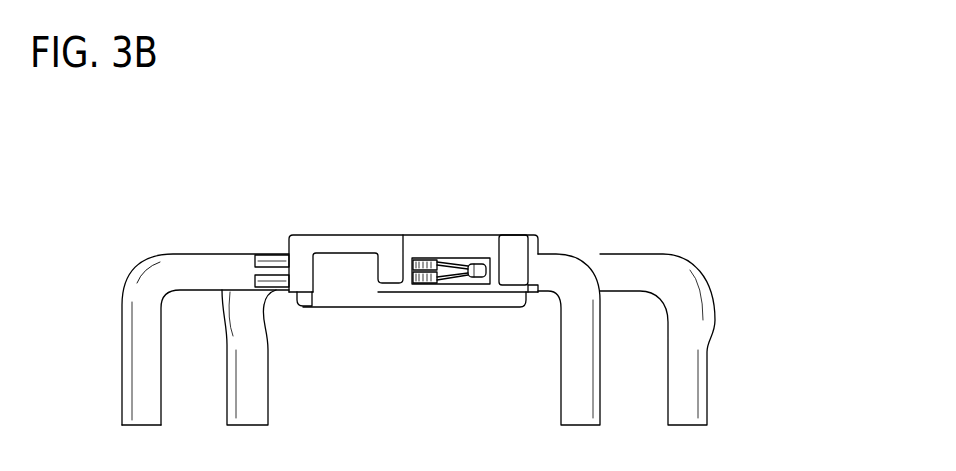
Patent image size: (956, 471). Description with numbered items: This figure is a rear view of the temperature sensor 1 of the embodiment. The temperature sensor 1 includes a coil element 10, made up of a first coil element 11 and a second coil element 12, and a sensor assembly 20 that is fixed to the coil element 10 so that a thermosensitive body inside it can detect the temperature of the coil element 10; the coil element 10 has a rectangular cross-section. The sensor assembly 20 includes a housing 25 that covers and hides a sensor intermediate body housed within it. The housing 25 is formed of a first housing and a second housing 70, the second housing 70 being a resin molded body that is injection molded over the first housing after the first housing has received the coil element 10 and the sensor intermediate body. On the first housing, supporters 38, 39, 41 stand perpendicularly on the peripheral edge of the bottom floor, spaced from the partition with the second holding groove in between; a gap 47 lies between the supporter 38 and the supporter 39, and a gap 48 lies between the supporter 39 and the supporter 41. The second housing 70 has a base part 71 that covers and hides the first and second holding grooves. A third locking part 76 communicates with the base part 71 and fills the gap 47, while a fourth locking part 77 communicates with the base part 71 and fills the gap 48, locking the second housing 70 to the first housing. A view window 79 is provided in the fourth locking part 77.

The temperature sensor 1 is at (505, 165).
The coil element 10 is at (645, 163).
The first coil element 11 is at (643, 254).
The second coil element 12 is at (589, 254).
The sensor assembly 20 is at (381, 227).
The housing 25 is at (413, 235).
The supporter 38 is at (307, 306).
The supporter 39 is at (386, 284).
The supporter 41 is at (506, 286).
The gap 47 is at (376, 267).
The gap 48 is at (491, 272).
The second housing 70 is at (428, 316).
The base part 71 is at (462, 308).
The third locking part 76 is at (333, 253).
The fourth locking part 77 is at (452, 235).
The view window 79 is at (466, 258).